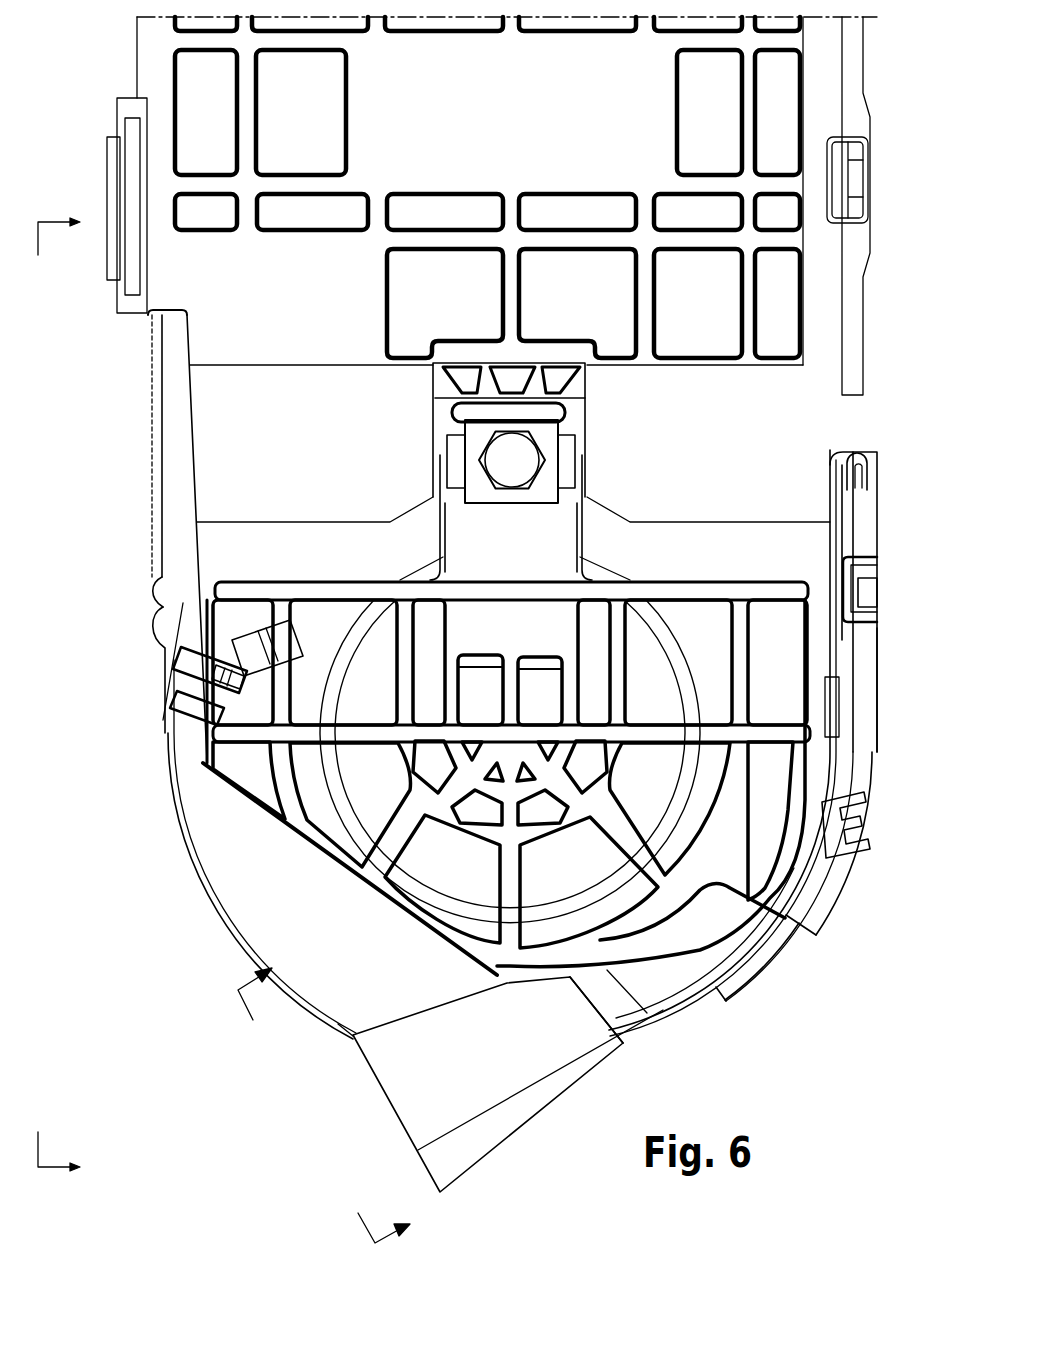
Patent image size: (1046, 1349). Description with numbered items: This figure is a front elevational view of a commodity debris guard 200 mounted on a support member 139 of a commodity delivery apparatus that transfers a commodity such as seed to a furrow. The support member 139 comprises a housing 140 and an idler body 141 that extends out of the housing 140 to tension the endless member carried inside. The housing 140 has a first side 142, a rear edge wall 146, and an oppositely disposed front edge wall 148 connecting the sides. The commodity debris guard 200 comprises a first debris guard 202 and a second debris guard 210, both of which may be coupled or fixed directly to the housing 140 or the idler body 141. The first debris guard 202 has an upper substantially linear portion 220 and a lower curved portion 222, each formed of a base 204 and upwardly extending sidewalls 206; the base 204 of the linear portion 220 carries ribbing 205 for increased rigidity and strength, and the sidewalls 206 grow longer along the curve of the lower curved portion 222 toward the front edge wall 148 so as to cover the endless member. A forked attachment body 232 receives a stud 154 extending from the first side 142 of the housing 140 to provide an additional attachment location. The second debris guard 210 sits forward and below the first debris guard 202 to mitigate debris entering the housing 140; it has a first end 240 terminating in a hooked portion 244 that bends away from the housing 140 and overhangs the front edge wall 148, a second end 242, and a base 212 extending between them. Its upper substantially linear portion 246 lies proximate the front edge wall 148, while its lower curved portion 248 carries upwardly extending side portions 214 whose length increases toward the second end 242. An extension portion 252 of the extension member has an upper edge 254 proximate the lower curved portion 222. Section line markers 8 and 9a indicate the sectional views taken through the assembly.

The housing 140 is at (506, 114).
The support member 139 is at (888, 195).
The section line 8 is at (71, 696).
The first side 142 is at (306, 451).
The idler body 141 is at (538, 576).
The rear edge wall 146 is at (147, 316).
The base 204 is at (160, 440).
The upper substantially linear portion 220 is at (160, 522).
The ribbing 205 is at (150, 600).
The upwardly extending sidewalls 206 is at (165, 652).
The first debris guard 202 is at (174, 814).
The stud 154 is at (172, 695).
The forked attachment body 232 is at (250, 622).
The lower curved portion 222 is at (296, 888).
The first end 240 is at (842, 447).
The hooked portion 244 is at (866, 440).
The upper substantially linear portion 246 is at (843, 533).
The front edge wall 148 is at (877, 693).
The second debris guard 210 is at (700, 998).
The lower curved portion 248 is at (810, 920).
The base 212 is at (812, 874).
The second end 242 is at (447, 1196).
The upwardly extending side portions 214 is at (530, 1048).
The extension portion 252 is at (447, 1112).
The upper edge 254 is at (330, 1060).
The commodity debris guard 200 is at (262, 1090).
The section line 9a is at (342, 1098).